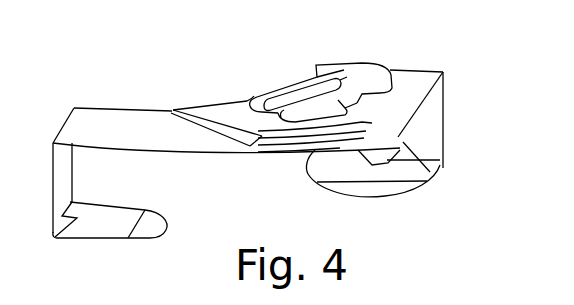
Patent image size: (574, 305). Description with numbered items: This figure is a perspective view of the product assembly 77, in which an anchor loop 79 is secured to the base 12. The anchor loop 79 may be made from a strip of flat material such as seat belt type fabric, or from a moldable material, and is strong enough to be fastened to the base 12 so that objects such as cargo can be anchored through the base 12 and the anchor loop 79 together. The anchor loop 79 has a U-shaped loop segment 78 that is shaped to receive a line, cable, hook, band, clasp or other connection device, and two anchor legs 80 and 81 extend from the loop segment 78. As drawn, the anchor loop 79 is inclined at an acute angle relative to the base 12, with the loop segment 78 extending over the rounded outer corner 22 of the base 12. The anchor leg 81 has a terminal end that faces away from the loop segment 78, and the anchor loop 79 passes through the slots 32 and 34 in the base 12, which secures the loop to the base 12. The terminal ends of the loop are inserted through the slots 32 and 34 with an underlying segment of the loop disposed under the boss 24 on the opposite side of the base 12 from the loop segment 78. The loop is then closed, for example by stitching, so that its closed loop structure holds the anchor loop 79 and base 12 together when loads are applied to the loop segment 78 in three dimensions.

The base 12 is at (175, 152).
The rounded outer corner 22 is at (430, 172).
The boss 24 is at (366, 121).
The slot 32 is at (248, 97).
The slot 34 is at (281, 118).
The product assembly 77 is at (137, 98).
The loop segment 78 is at (368, 80).
The anchor loop 79 is at (348, 79).
The anchor leg 80 is at (297, 87).
The anchor leg 81 is at (392, 92).